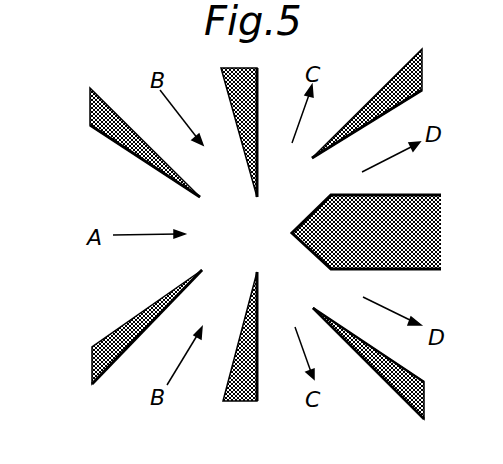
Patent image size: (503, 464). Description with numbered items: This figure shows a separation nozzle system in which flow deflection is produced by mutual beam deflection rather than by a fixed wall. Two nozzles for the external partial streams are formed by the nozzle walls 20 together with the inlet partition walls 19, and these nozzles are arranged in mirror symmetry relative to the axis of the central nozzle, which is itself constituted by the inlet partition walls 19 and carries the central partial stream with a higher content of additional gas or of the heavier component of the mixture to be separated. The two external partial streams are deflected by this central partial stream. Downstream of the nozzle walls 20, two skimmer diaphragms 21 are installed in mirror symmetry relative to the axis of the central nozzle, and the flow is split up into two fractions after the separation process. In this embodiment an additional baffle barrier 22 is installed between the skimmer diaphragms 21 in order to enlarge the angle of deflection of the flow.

The inlet partition walls 19 is at (90, 108).
The nozzle walls 20 is at (226, 69).
The skimmer diaphragm 21 is at (420, 71).
The baffle barrier 22 is at (440, 218).